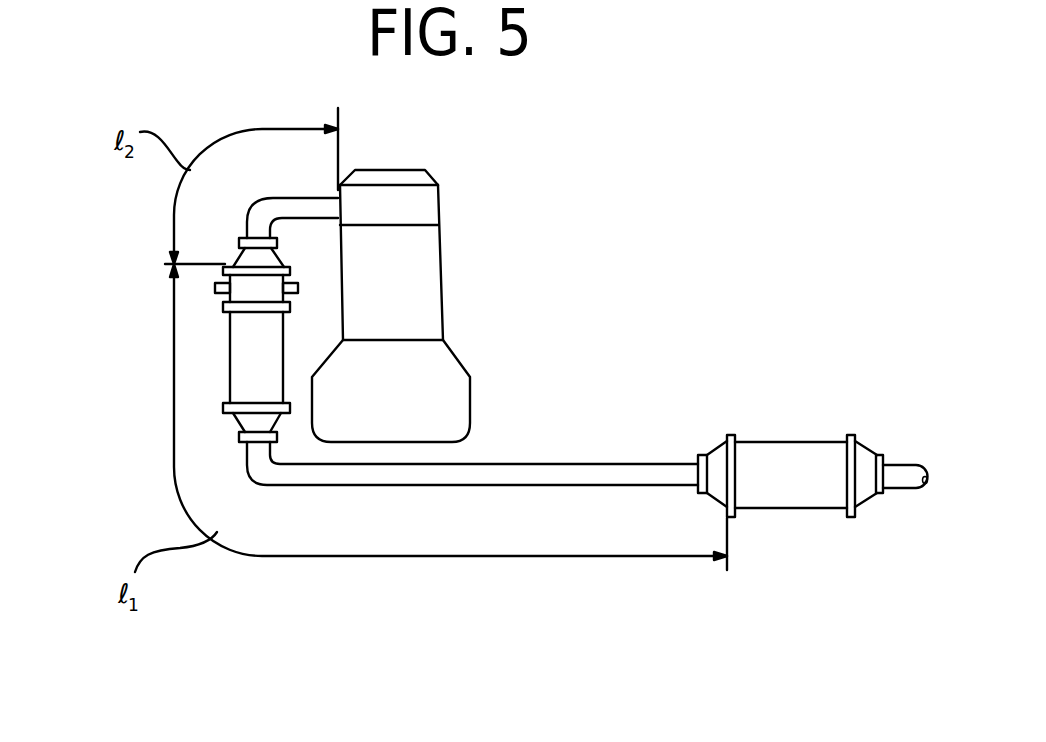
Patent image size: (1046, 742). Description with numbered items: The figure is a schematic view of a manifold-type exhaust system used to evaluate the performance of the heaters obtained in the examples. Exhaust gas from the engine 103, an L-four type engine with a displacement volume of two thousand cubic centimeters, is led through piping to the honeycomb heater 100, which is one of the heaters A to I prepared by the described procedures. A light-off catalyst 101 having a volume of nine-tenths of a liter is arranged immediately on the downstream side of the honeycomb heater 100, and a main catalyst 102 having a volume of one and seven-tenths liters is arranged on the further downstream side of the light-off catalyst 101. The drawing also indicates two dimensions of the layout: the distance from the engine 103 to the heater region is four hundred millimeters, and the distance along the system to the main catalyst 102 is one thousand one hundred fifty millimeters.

The honeycomb heater 100 is at (247, 283).
The light-off catalyst 101 is at (247, 370).
The main catalyst 102 is at (781, 462).
The engine 103 is at (432, 291).